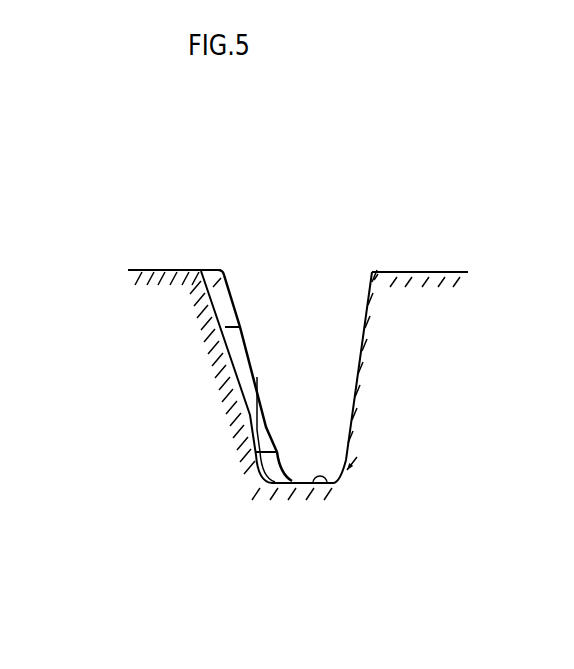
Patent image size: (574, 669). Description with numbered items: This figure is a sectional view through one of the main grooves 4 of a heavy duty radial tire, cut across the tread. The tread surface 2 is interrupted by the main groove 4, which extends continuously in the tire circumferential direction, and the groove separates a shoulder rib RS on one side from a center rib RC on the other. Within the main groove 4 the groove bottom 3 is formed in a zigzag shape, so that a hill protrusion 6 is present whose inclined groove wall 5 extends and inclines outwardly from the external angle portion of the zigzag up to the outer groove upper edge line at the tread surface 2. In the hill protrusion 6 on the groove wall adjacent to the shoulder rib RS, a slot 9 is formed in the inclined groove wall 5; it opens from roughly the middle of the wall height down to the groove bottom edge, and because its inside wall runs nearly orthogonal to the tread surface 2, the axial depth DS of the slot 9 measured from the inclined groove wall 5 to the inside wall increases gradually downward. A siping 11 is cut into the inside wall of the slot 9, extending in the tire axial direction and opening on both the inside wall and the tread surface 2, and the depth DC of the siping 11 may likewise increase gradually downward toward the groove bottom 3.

The tread surface 2 is at (160, 268).
The groove bottom 3 is at (335, 483).
The main groove 4 is at (312, 290).
The inclined groove wall 5 is at (233, 298).
The hill protrusion 6 is at (244, 314).
The slot 9 is at (265, 430).
The siping 11 is at (224, 268).
The shoulder rib RS is at (153, 304).
The center rib RC is at (403, 312).
The depth of siping DC is at (219, 352).
The depth of slot DS is at (258, 484).